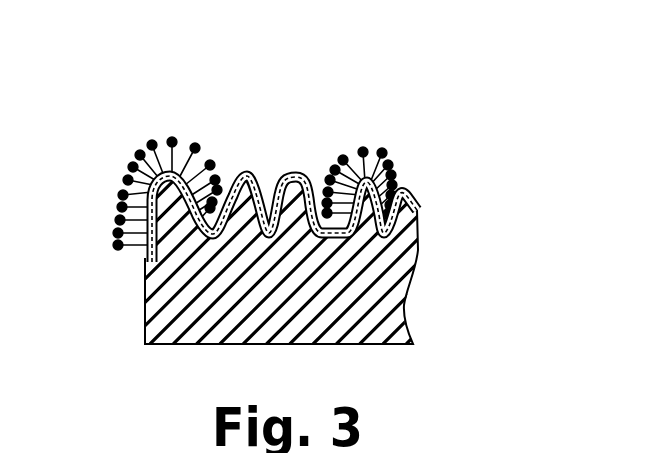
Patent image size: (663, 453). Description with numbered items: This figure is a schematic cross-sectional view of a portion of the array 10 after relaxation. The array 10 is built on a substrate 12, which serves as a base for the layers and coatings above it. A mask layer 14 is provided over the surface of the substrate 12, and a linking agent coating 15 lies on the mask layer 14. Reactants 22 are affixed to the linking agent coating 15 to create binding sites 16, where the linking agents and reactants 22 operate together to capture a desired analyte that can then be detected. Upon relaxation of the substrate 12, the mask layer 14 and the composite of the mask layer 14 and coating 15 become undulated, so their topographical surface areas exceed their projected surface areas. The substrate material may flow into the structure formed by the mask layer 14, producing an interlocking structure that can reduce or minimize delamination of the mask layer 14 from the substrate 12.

The array 10 is at (450, 128).
The substrate 12 is at (283, 318).
The mask layer 14 is at (306, 193).
The linking agent coating 15 is at (284, 176).
The binding sites 16 is at (236, 163).
The reactants 22 is at (120, 178).